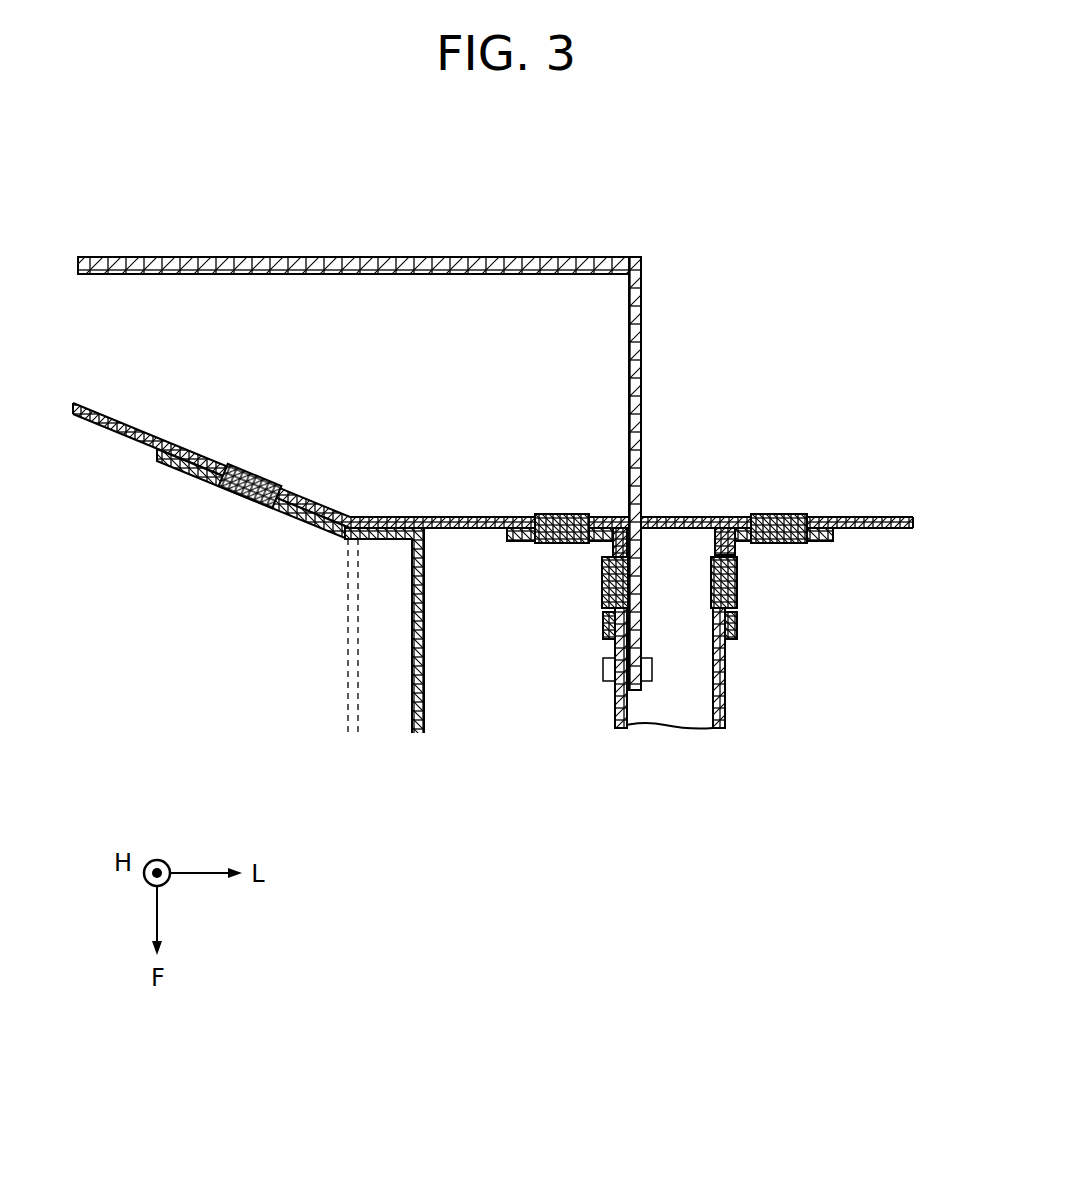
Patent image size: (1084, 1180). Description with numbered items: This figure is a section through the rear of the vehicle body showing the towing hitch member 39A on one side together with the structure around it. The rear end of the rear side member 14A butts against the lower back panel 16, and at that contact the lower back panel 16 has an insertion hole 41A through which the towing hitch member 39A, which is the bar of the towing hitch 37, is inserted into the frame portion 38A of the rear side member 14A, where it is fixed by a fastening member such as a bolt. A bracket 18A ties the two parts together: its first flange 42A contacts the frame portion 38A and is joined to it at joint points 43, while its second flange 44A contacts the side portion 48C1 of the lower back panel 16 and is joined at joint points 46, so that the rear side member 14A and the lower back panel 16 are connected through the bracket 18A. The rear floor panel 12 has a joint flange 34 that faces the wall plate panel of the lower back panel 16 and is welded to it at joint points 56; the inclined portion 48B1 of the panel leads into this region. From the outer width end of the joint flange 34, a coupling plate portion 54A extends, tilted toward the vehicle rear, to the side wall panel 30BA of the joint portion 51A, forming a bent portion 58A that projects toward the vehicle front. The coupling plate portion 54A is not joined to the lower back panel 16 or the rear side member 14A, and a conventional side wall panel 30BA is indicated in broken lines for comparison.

The towing hitch 37 is at (280, 250).
The towing hitch member 39A is at (642, 385).
The inclined panel portion 48B1 is at (104, 412).
The coupling plate portion 54A is at (390, 517).
The side portion 48C1 is at (455, 517).
The insertion hole 41A is at (645, 517).
The lower back panel 16 is at (786, 474).
The second flange 44A is at (523, 543).
The bracket 18A is at (592, 552).
The joint points 46 is at (566, 514).
The joint points 43 is at (607, 582).
The first flange 42A is at (605, 623).
The frame portion 38A is at (615, 703).
The rear side member 14A is at (668, 708).
The joint flange 34 is at (289, 517).
The bent portion 58A is at (347, 541).
The side wall panel 30BA is at (439, 666).
The joint portion 51A is at (423, 698).
The rear floor panel 12 is at (400, 662).
The joint points 56 is at (256, 474).